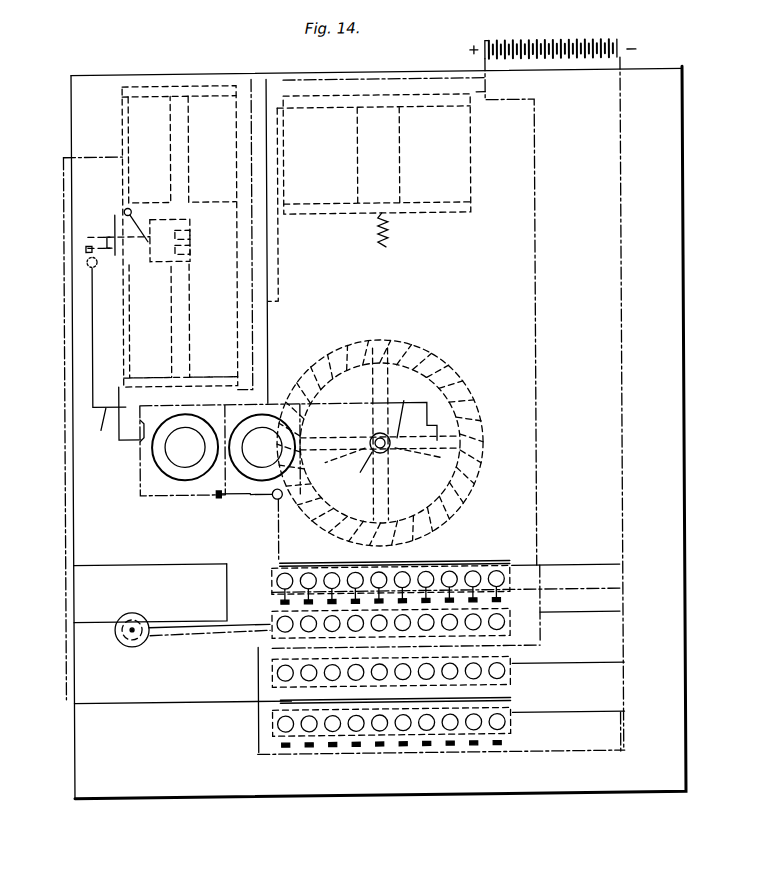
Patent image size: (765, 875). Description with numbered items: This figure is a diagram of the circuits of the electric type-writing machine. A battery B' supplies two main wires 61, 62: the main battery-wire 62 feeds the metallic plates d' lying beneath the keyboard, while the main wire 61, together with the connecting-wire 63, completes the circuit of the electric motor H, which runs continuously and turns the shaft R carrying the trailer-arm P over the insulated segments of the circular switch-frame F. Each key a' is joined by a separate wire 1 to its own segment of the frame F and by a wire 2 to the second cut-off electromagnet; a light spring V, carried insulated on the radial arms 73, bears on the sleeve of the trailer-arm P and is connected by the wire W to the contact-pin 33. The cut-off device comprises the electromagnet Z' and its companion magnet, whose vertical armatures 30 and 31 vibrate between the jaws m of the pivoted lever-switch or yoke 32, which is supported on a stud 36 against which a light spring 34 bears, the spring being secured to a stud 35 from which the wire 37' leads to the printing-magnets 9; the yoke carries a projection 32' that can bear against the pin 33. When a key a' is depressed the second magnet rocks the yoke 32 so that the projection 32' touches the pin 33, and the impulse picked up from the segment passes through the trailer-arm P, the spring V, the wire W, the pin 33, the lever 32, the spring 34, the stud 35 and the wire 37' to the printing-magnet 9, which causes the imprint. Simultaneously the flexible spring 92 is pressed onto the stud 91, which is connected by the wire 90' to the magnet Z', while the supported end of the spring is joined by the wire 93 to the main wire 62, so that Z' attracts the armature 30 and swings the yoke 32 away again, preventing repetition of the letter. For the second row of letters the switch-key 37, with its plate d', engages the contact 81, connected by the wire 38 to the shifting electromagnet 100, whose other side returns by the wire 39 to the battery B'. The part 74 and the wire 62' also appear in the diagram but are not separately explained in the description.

The wire 2 is at (65, 191).
The wire 1 is at (311, 546).
The printing-magnet 9 is at (186, 479).
The armature 30 is at (193, 247).
The armature 31 is at (193, 231).
The lever-switch 32 is at (117, 232).
The contact-stud 32' is at (58, 243).
The contact-pin 33 is at (88, 261).
The spring 34 is at (141, 222).
The stud 35 is at (126, 206).
The pivot stud 36 is at (170, 240).
The switch-key 37 is at (189, 617).
The wire 37' is at (78, 402).
The wire 38 is at (150, 593).
The wire 39 is at (391, 104).
The main wire 61 is at (536, 204).
The main battery-wire 62 is at (632, 403).
The conductor 62' is at (243, 699).
The connecting-wire 63 is at (472, 651).
The radial arm 73 is at (379, 434).
The arm 74 is at (355, 470).
The contact 81 is at (148, 616).
The wire 90' is at (133, 512).
The stud 91 is at (250, 493).
The flexible spring 92 is at (277, 499).
The wire 93 is at (282, 556).
The shifting electromagnet 100 is at (472, 172).
The jaw m is at (189, 236).
The electromagnet Z' is at (132, 322).
The wire W is at (97, 436).
The battery B' is at (553, 33).
The circular switch-frame F is at (441, 374).
The spring V is at (404, 411).
The shaft R is at (417, 460).
The trailer-arm P is at (341, 460).
The electric motor H is at (441, 660).
The contact-key a' is at (262, 601).
The metallic plate d' is at (311, 638).